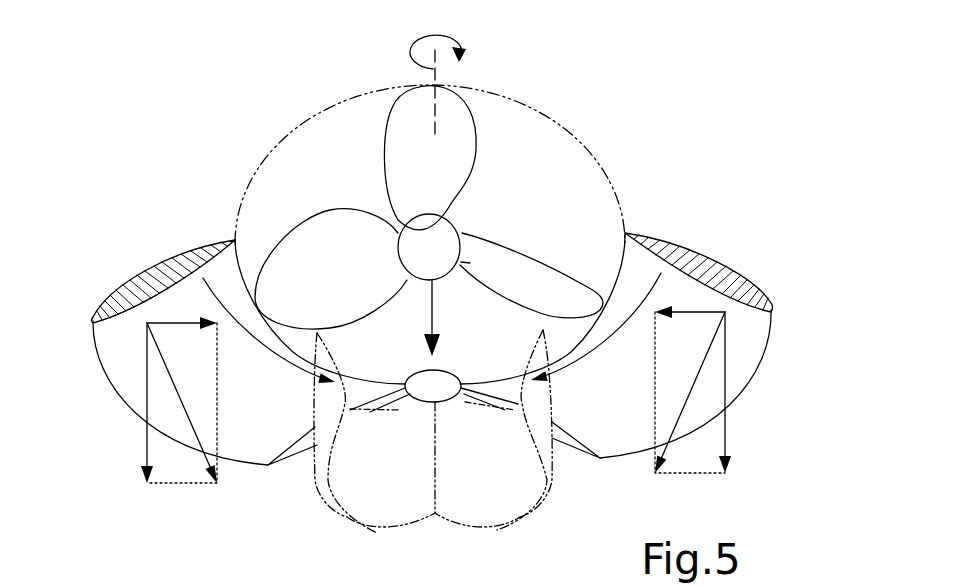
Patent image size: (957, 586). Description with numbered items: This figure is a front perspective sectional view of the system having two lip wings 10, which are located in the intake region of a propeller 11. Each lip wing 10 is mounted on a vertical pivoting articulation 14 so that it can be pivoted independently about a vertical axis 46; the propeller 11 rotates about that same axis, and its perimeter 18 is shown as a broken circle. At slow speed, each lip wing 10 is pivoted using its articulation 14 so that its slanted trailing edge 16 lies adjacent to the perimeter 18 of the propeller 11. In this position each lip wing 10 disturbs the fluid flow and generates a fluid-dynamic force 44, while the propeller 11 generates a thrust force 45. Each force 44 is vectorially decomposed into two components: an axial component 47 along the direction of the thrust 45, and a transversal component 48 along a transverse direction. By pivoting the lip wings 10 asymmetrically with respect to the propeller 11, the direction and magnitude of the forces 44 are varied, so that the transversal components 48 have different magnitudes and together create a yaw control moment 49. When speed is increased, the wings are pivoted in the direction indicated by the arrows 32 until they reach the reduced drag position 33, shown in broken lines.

The lip wing 10 is at (265, 460).
The propeller 11 is at (552, 172).
The vertical pivoting articulation 14 is at (423, 387).
The slanted trailing edge 16 is at (240, 268).
The perimeter of the propeller 18 is at (297, 128).
The pivoting arrows 32 is at (255, 352).
The reduced drag position 33 is at (350, 483).
The fluid-dynamic force 44 is at (200, 443).
The thrust force 45 is at (434, 322).
The vertical axis 46 is at (436, 107).
The axial component 47 is at (145, 443).
The transversal component 48 is at (185, 324).
The yaw control moment 49 is at (408, 52).